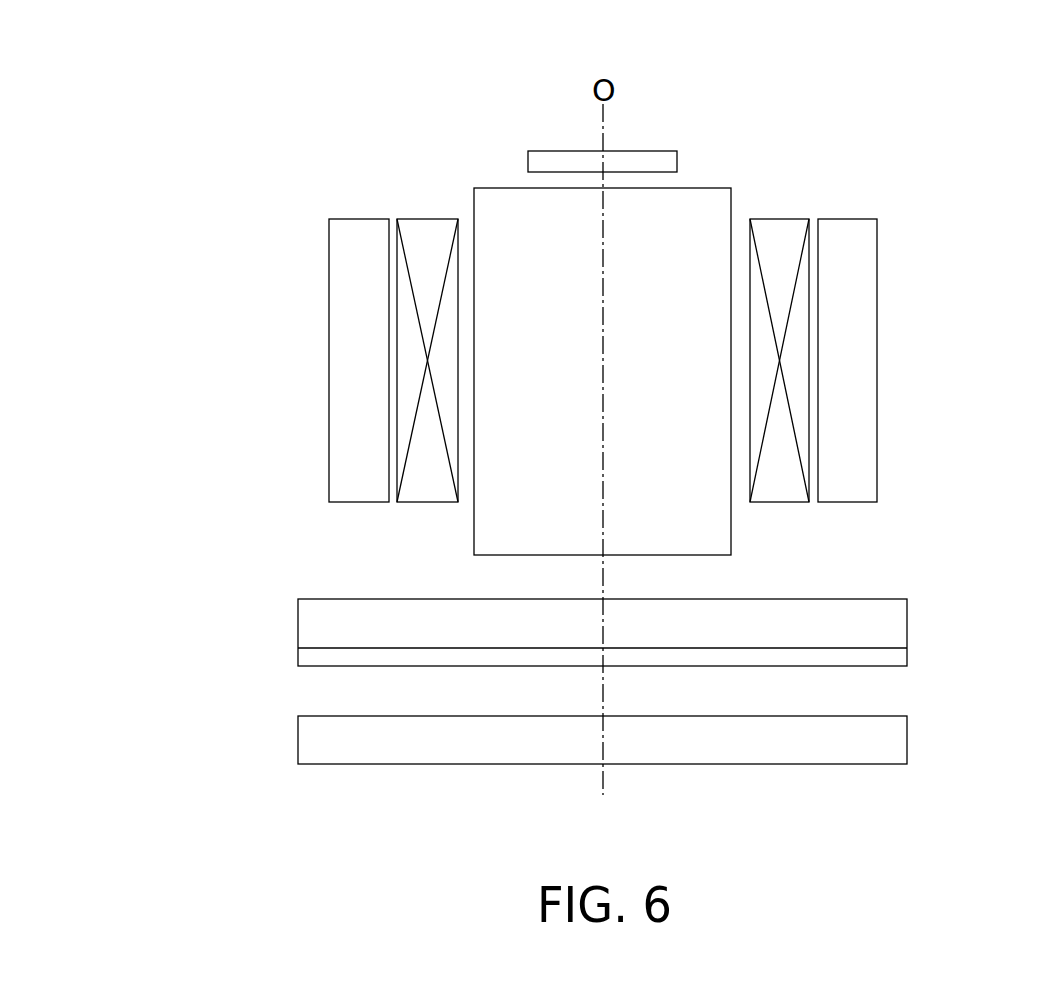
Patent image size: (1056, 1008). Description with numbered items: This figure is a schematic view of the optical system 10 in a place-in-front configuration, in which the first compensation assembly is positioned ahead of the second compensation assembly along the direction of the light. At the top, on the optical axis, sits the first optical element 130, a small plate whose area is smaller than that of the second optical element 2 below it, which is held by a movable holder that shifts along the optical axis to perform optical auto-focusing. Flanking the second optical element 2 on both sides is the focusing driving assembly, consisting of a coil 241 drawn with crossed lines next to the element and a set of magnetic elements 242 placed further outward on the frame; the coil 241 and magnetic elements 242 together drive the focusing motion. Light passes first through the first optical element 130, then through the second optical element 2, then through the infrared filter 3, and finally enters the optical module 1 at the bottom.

The optical system 10 is at (228, 36).
The second optical element 2 is at (501, 199).
The first optical element 130 is at (665, 165).
The coil 241 is at (408, 388).
The magnetic elements 242 is at (342, 306).
The infrared filter 3 is at (895, 630).
The optical module 1 is at (895, 743).